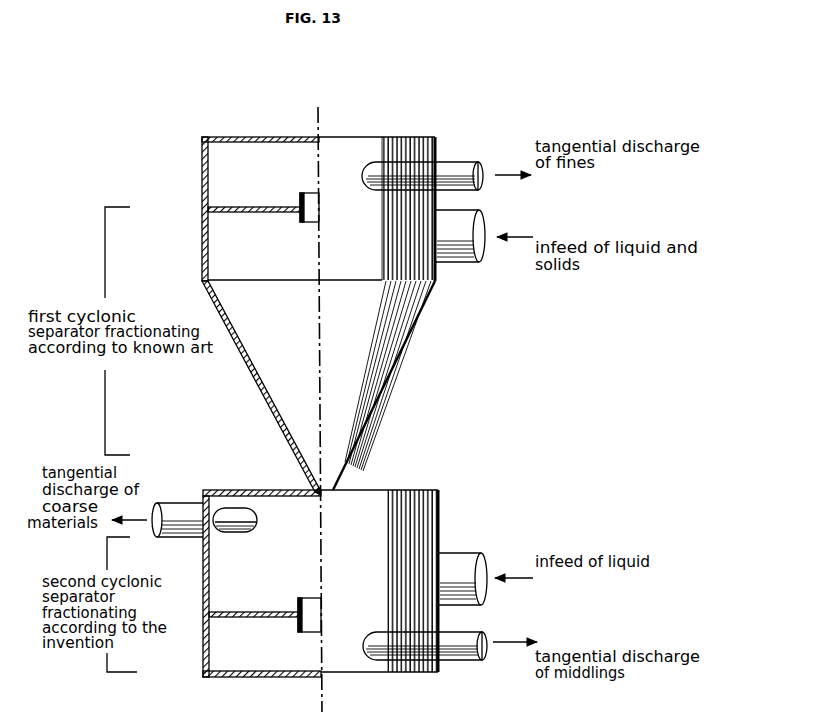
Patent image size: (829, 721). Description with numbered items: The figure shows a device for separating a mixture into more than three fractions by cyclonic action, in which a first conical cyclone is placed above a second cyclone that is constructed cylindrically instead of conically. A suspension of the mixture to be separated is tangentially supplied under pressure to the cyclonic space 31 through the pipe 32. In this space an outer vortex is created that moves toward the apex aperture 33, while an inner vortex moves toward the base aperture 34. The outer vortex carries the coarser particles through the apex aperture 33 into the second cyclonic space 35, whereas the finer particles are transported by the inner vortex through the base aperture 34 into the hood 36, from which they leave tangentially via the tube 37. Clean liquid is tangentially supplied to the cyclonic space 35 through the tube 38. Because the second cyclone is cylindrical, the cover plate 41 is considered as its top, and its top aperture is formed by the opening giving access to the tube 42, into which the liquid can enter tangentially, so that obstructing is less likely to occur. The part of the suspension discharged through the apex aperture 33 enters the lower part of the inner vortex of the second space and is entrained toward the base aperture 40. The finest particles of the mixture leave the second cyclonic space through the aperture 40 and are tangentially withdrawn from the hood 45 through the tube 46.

The cyclonic space 31 is at (393, 372).
The pipe 32 is at (449, 262).
The apex aperture 33 is at (306, 486).
The base aperture 34 is at (313, 193).
The cyclonic space 35 is at (430, 581).
The hood 36 is at (273, 138).
The tube 37 is at (445, 163).
The tube 38 is at (446, 553).
The base aperture 40 is at (309, 594).
The cover plate 41 is at (237, 490).
The tube 42 is at (189, 501).
The hood 45 is at (206, 637).
The tube 46 is at (448, 660).